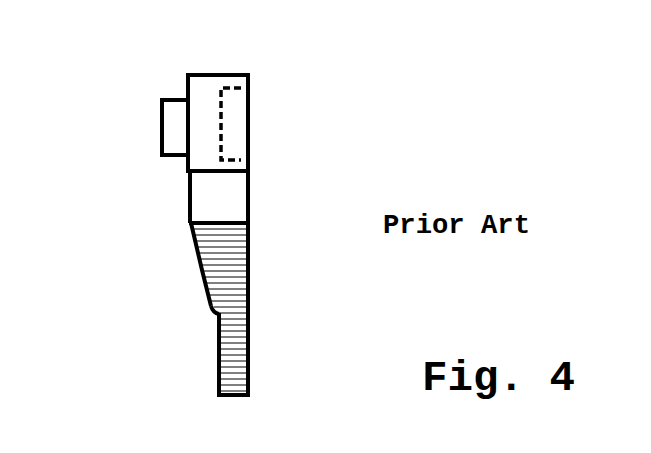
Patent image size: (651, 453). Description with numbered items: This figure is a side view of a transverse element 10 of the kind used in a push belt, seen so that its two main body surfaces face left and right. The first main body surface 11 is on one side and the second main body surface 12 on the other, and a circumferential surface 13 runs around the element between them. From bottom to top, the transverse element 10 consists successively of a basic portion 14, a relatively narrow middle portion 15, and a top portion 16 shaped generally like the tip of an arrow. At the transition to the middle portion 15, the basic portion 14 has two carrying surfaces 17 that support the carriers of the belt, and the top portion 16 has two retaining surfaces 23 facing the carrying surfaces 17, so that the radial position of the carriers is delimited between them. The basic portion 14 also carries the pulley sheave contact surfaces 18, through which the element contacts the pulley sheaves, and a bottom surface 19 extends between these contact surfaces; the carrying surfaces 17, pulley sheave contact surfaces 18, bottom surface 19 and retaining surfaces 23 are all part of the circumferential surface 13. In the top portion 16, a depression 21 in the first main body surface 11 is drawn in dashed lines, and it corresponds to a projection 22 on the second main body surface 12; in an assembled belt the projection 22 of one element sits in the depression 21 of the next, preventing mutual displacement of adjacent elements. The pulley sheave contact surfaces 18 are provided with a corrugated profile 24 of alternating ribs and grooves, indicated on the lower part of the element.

The transverse element 10 is at (221, 318).
The first main body surface 11 is at (248, 308).
The second main body surface 12 is at (190, 242).
The circumferential surface 13 is at (218, 272).
The basic portion 14 is at (232, 342).
The middle portion 15 is at (230, 205).
The top portion 16 is at (200, 85).
The carrying surfaces 17 is at (222, 222).
The pulley sheave contact surfaces 18 is at (222, 297).
The bottom surface 19 is at (232, 395).
The depression 21 is at (236, 126).
The projection 22 is at (173, 128).
The retaining surfaces 23 is at (215, 174).
The profile 24 is at (238, 367).